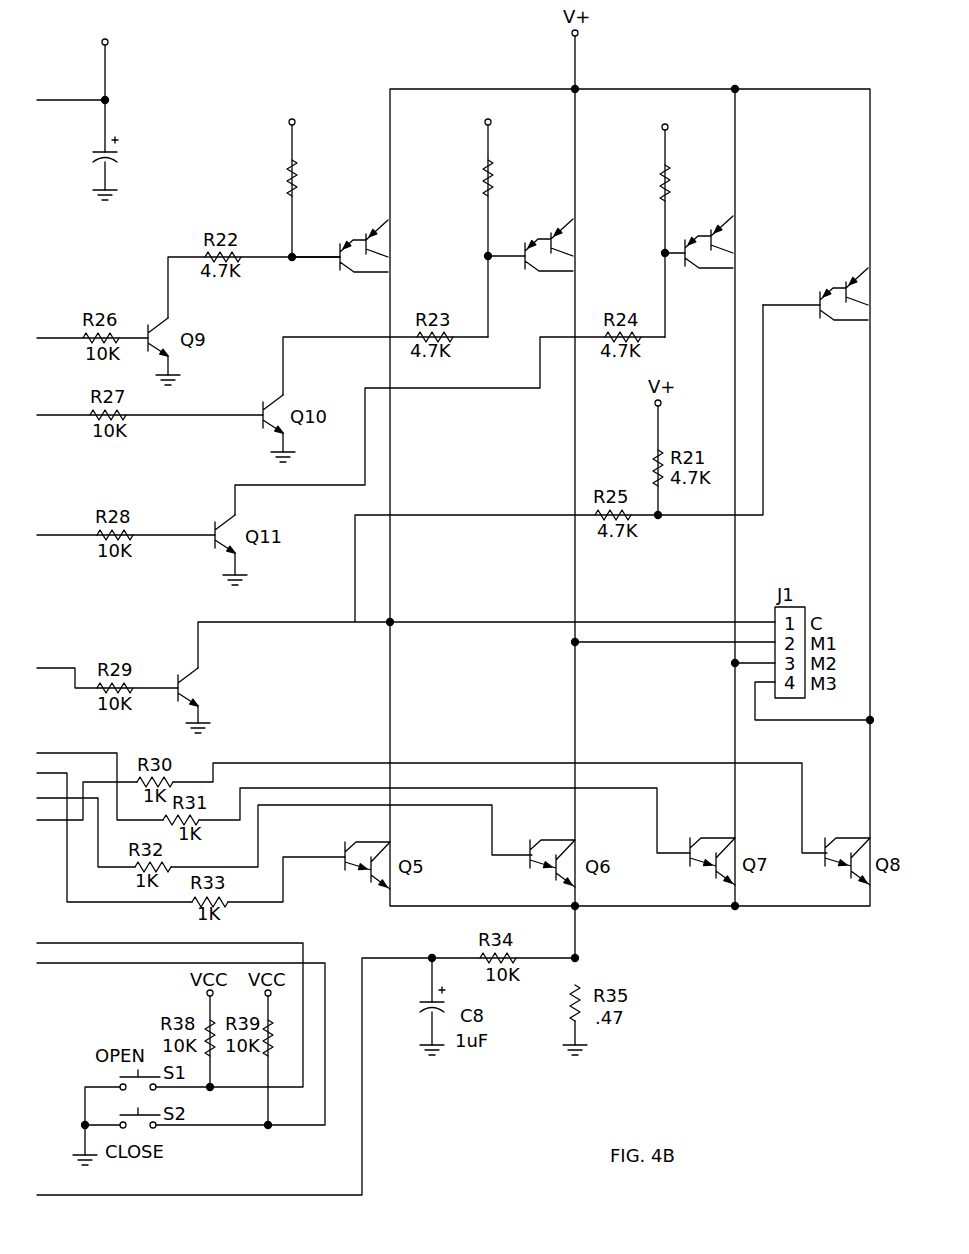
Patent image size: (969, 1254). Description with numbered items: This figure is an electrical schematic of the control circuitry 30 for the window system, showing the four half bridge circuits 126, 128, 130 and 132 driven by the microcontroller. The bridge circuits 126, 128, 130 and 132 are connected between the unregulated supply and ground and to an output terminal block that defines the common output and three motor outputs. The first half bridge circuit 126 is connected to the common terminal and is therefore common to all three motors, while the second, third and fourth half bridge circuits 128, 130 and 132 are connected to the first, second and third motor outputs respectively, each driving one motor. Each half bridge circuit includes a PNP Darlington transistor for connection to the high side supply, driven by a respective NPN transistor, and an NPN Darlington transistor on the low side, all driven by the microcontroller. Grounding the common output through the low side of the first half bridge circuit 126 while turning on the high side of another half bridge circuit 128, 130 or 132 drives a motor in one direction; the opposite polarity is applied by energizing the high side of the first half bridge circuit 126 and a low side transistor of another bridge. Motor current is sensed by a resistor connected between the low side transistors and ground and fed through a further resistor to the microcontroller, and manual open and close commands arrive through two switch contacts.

The motor control circuit 30 is at (239, 70).
The first half bridge circuit 126 is at (435, 68).
The second half bridge circuit 128 is at (609, 172).
The third half bridge circuit 130 is at (776, 170).
The fourth half bridge circuit 132 is at (841, 262).